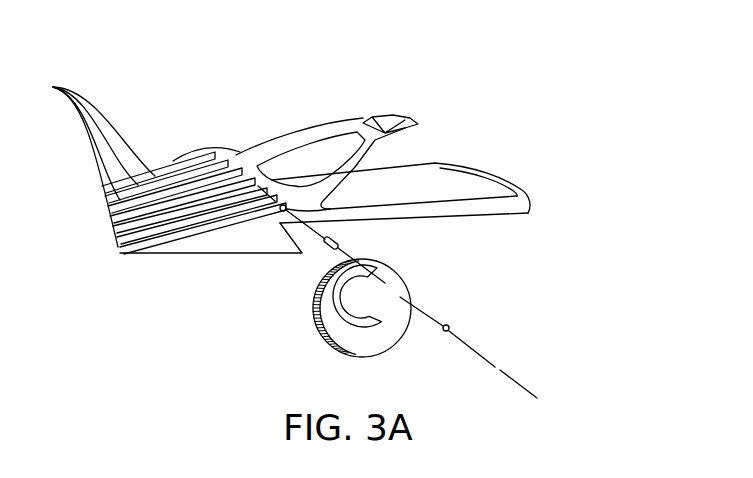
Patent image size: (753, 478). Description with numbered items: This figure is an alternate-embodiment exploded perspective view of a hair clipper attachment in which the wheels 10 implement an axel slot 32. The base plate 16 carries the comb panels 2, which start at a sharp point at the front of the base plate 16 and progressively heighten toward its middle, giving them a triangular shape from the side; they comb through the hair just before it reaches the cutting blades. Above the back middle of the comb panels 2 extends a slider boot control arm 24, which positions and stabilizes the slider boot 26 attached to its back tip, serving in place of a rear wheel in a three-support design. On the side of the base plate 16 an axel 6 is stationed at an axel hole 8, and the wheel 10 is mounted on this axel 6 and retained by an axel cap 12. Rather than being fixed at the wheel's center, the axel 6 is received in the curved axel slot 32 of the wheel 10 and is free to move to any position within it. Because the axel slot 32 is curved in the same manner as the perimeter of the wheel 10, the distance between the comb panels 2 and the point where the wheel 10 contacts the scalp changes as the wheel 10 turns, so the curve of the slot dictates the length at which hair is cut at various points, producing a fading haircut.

The comb panels 2 is at (56, 87).
The slider boot control arm 24 is at (247, 153).
The slider boot 26 is at (377, 118).
The base plate 16 is at (447, 187).
The axel hole 8 is at (280, 211).
The axel cap 12 is at (447, 325).
The axel 6 is at (338, 256).
The wheel 10 is at (360, 335).
The axel slot 32 is at (372, 316).